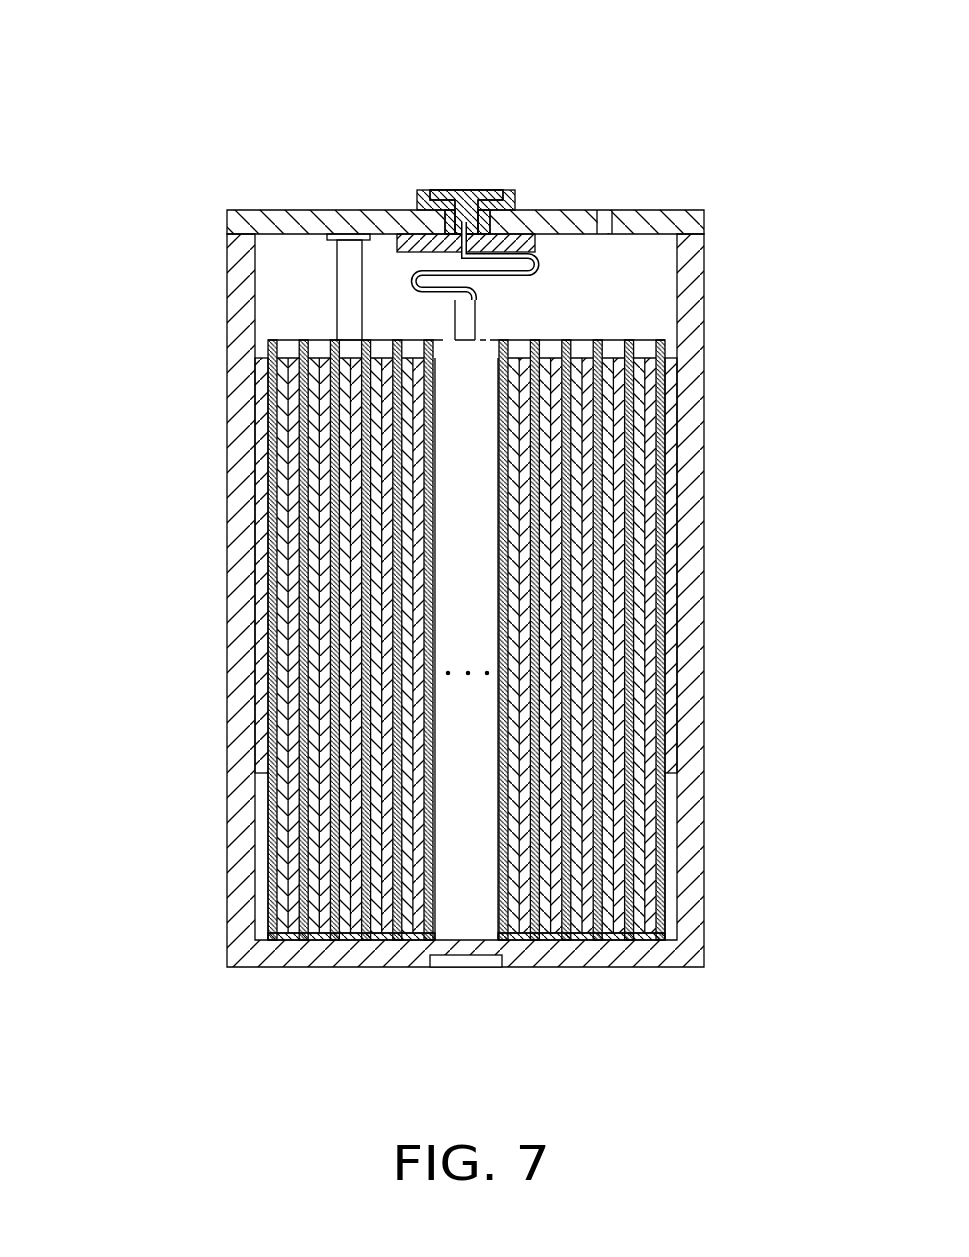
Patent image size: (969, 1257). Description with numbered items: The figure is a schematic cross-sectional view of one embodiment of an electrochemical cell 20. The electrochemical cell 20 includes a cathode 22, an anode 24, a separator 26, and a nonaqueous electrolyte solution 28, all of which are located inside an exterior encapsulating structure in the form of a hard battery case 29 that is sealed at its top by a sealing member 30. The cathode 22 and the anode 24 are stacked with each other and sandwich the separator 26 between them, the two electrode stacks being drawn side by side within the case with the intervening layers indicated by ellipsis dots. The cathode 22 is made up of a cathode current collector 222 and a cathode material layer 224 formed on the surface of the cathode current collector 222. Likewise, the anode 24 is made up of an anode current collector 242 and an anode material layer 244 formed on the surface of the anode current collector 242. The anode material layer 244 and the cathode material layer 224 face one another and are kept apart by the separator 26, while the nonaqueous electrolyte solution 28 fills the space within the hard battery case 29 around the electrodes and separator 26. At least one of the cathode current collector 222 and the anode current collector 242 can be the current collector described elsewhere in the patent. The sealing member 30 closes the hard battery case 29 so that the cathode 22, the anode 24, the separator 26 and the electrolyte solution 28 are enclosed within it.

The electrochemical cell 20 is at (444, 40).
The cathode 22 is at (817, 610).
The cathode current collector 222 is at (647, 635).
The cathode material layer 224 is at (647, 703).
The anode 24 is at (147, 605).
The anode current collector 242 is at (313, 631).
The anode material layer 244 is at (313, 703).
The separator 26 is at (300, 823).
The nonaqueous electrolyte solution 28 is at (582, 645).
The hard battery case 29 is at (245, 310).
The sealing member 30 is at (423, 190).